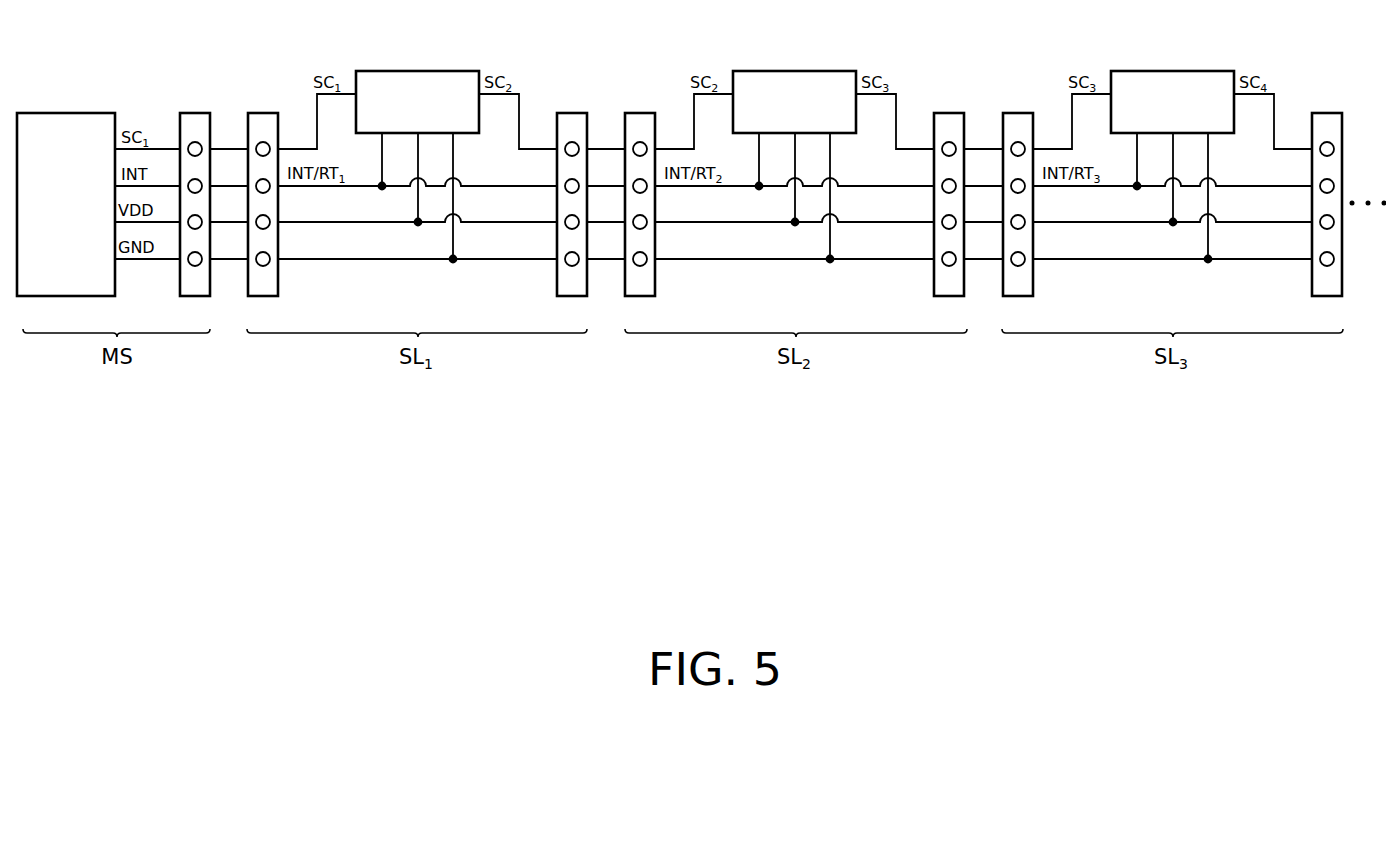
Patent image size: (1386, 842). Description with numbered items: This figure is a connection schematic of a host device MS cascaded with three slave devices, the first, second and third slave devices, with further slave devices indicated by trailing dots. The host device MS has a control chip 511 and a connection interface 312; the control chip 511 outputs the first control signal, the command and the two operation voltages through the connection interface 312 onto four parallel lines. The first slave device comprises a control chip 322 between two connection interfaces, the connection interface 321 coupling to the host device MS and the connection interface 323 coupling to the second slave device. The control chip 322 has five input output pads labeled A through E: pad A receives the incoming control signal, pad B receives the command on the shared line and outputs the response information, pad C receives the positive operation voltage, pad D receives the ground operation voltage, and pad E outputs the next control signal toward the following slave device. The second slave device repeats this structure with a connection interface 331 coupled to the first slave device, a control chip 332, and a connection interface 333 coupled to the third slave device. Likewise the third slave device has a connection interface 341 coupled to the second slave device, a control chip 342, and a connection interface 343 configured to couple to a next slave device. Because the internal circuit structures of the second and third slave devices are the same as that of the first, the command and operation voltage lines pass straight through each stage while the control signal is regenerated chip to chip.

The control chip 511 is at (65, 113).
The connection interface 312 is at (195, 113).
The connection interface 321 is at (263, 113).
The control chip 322 is at (418, 71).
The connection interface 323 is at (572, 113).
The connection interface 331 is at (640, 113).
The control chip 332 is at (795, 71).
The connection interface 333 is at (949, 113).
The connection interface 341 is at (1018, 113).
The control chip 342 is at (1173, 71).
The connection interface 343 is at (1327, 113).